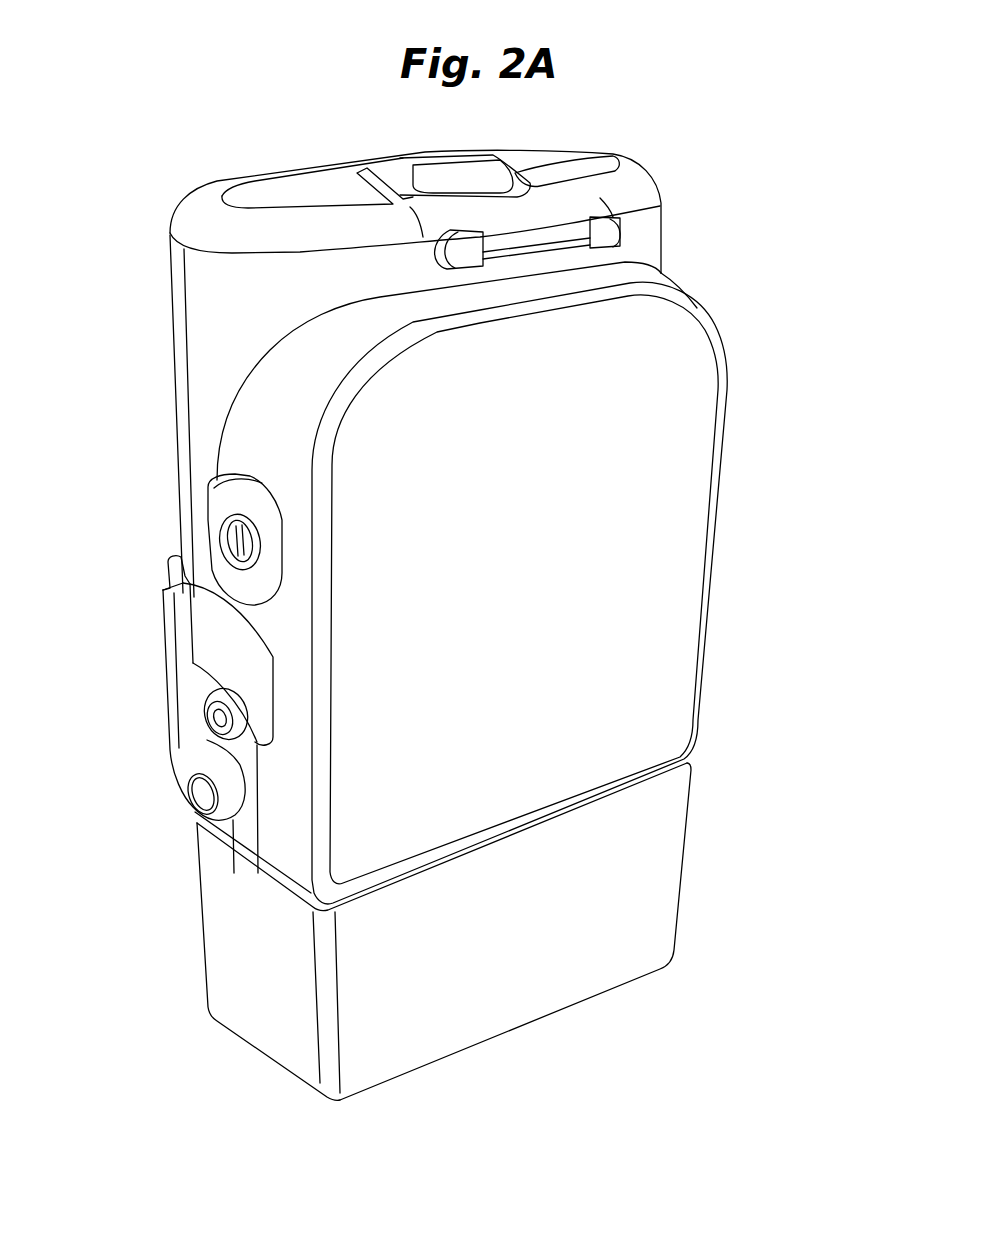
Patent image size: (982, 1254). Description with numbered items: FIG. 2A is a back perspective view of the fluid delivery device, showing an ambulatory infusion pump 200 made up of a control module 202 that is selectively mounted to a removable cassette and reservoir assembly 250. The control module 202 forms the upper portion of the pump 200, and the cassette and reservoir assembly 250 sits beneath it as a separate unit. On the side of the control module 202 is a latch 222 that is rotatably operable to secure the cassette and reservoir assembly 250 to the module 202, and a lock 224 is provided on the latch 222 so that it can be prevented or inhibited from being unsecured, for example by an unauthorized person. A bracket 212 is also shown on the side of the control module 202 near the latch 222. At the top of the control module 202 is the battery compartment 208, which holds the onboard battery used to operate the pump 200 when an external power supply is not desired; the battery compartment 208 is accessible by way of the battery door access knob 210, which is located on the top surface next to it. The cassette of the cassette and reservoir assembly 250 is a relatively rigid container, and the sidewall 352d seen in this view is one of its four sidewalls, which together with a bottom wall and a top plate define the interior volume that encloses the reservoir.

The ambulatory infusion pump 200 is at (714, 180).
The control module 202 is at (165, 343).
The battery compartment 208 is at (565, 170).
The battery door access knob 210 is at (450, 158).
The bracket with screw 212 is at (222, 540).
The latch 222 is at (183, 686).
The lock 224 is at (220, 722).
The cassette and reservoir assembly 250 is at (714, 908).
The sidewall 352d is at (443, 1025).